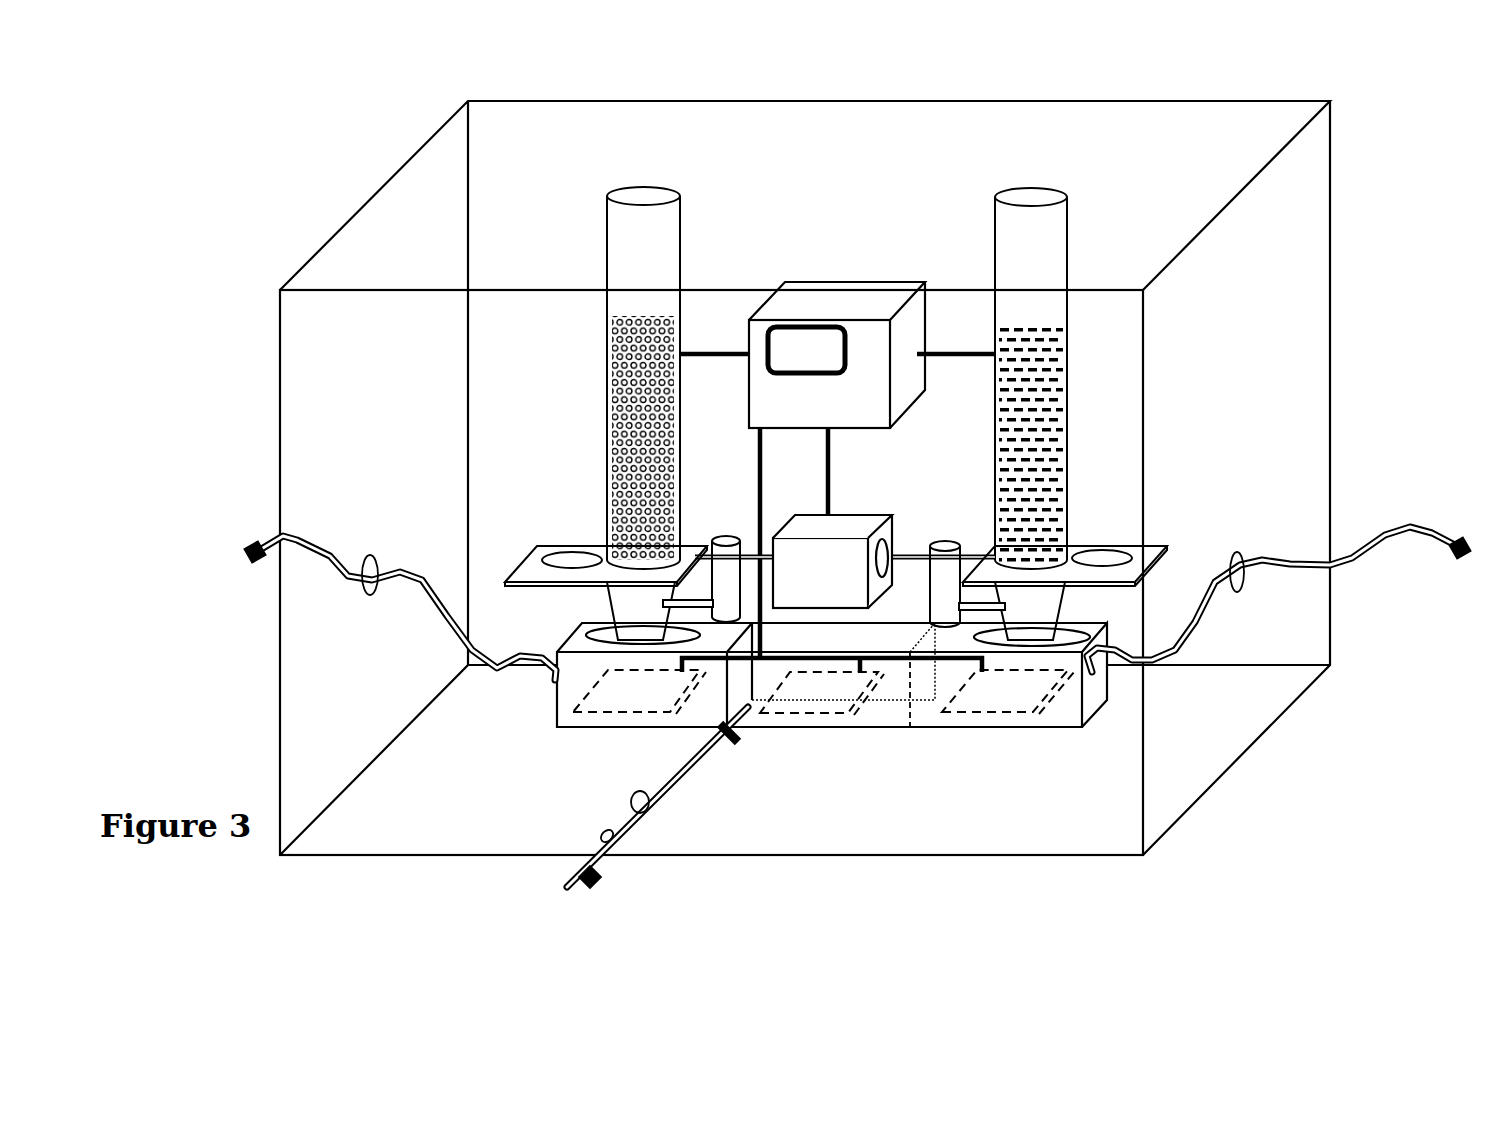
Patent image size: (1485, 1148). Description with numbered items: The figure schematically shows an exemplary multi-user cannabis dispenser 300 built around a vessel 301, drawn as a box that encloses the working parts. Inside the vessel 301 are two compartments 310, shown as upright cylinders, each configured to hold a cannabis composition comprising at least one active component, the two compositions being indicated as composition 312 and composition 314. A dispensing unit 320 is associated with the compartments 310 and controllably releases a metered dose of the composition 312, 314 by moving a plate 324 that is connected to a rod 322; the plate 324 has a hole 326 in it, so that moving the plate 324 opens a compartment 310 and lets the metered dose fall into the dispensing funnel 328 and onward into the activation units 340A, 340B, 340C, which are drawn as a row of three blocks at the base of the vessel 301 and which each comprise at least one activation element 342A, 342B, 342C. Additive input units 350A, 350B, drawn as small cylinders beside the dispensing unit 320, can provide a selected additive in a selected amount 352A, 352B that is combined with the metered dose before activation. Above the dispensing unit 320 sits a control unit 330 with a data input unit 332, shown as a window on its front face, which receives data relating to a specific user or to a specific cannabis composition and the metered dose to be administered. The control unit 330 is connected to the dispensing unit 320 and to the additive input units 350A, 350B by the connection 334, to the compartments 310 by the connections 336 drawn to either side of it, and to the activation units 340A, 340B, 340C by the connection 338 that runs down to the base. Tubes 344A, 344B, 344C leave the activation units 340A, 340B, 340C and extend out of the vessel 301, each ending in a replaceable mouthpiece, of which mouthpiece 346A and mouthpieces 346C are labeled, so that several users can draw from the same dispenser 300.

The multi-user cannabis dispenser 300 is at (236, 411).
The vessel 301 is at (1259, 741).
The compartments 310 is at (833, 369).
The cannabis composition comprising at least one active component 312 is at (640, 388).
The cannabis composition comprising at least one active component 314 is at (1038, 387).
The dispensing unit 320 is at (836, 577).
The rod 322 is at (905, 554).
The plate 324 is at (849, 532).
The hole 326 is at (1101, 551).
The dispensing funnel 328 is at (1042, 600).
The control unit 330 is at (845, 340).
The data input unit 332 is at (800, 352).
The connection 334 is at (842, 463).
The connections 336 is at (730, 367).
The connection 338 is at (755, 505).
The activation unit 340A is at (708, 702).
The activation unit 340B is at (831, 707).
The activation unit 340C is at (929, 707).
The first heating element 342A is at (668, 702).
The second heating element 342B is at (868, 712).
The third heating element 342C is at (1045, 712).
The tube 344A is at (400, 580).
The tube 344B is at (597, 832).
The tube 344C is at (1288, 557).
The replaceable mouthpiece 346A is at (254, 570).
The replaceable mouthpiece 346C is at (1458, 521).
The additive input unit 350A is at (727, 539).
The additive input unit 350B is at (947, 545).
The selected additive in a selected amount 352A is at (660, 604).
The selected additive in a selected amount 352B is at (1009, 612).